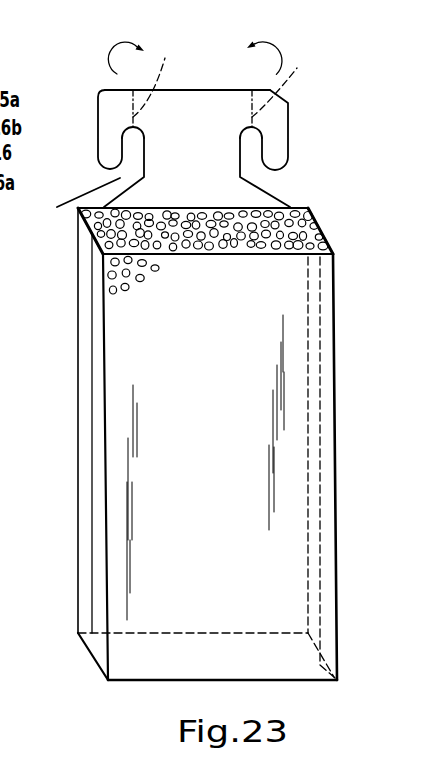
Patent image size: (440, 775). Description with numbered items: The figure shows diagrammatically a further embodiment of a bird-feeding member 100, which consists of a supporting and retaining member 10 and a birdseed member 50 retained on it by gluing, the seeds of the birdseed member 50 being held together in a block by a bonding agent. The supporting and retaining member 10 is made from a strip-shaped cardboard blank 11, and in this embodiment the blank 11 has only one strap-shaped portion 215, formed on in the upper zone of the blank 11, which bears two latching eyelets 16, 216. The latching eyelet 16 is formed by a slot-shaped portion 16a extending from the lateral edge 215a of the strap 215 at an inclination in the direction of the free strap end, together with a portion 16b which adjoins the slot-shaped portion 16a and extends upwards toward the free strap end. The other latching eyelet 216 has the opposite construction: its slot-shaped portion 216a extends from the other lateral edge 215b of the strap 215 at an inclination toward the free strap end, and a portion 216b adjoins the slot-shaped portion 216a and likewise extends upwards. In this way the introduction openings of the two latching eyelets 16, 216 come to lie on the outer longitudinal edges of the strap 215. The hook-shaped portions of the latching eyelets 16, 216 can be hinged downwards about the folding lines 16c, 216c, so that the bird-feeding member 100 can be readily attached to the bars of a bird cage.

The supporting and retaining member 10 is at (71, 395).
The blank 11 is at (89, 338).
The birdseed member 50 is at (120, 518).
The bird-feeding member 100 is at (178, 449).
The strap-shaped portion 215 is at (198, 98).
The lateral edge 215a is at (98, 126).
The other lateral edge 215b is at (291, 115).
The latching eyelet 16 is at (92, 178).
The slot-shaped portion 16a is at (80, 203).
The portion 16b is at (133, 137).
The folding line 16c is at (146, 81).
The latching eyelet 216 is at (312, 165).
The slot-shaped portion 216a is at (272, 182).
The portion 216b is at (248, 137).
The folding line 216c is at (290, 84).